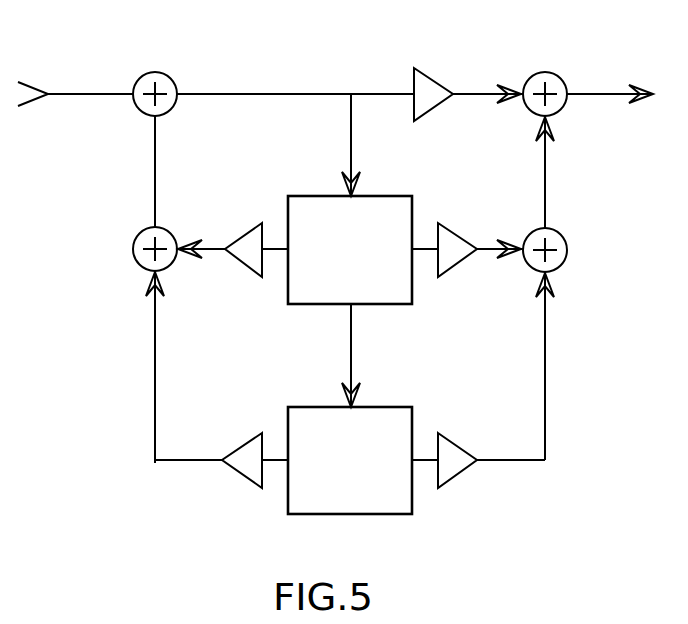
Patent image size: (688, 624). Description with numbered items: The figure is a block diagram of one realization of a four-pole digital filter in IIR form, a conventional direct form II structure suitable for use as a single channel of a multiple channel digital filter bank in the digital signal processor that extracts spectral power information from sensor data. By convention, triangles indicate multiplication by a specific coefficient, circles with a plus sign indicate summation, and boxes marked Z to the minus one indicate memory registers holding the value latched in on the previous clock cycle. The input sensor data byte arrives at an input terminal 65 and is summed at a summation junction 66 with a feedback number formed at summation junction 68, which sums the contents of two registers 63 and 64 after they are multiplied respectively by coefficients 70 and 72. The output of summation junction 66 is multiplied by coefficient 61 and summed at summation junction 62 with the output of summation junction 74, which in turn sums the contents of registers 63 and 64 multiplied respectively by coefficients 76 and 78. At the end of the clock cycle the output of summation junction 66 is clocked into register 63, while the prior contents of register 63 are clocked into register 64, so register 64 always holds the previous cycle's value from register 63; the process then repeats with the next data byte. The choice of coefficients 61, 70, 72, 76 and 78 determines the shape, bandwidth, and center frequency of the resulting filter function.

The input terminal 65 is at (48, 92).
The summation junction 66 is at (172, 82).
The coefficient 61 is at (440, 80).
The summation junction 62 is at (563, 80).
The register 63 is at (383, 196).
The register 64 is at (381, 407).
The summation junction 68 is at (174, 237).
The coefficient 70 is at (244, 266).
The coefficient 72 is at (242, 475).
The summation junction 74 is at (564, 238).
The coefficient 76 is at (461, 237).
The coefficient 78 is at (461, 446).